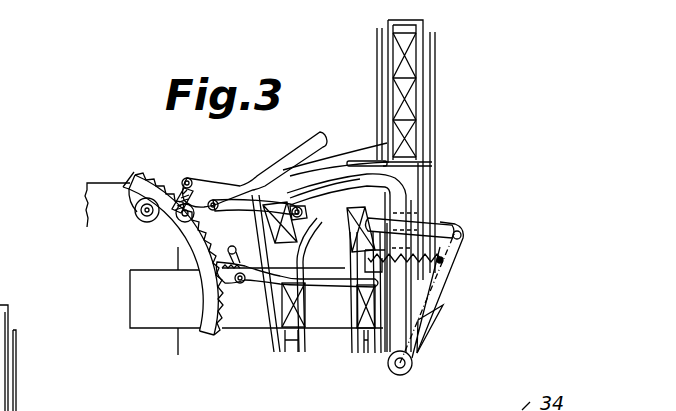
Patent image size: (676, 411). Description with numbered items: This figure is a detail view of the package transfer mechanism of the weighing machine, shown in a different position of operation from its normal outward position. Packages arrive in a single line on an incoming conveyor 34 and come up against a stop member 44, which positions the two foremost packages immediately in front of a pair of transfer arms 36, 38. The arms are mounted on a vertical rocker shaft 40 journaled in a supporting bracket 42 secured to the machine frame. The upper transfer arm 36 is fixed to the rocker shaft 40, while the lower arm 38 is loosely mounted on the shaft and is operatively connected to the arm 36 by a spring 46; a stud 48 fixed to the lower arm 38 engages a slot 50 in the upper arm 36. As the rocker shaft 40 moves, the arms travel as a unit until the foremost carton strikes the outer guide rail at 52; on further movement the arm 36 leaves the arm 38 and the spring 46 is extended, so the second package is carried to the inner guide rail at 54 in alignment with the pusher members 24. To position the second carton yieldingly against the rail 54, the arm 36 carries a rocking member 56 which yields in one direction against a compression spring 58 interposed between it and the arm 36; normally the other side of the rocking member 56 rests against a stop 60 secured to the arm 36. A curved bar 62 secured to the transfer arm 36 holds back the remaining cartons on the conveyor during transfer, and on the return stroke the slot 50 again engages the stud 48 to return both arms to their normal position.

The pusher members 24 is at (296, 141).
The incoming conveyor 34 is at (407, 22).
The upper transfer arm 36 is at (400, 190).
The lower transfer arm 38 is at (462, 247).
The vertical rocker shaft 40 is at (407, 373).
The supporting bracket 42 is at (325, 332).
The stop member 44 is at (410, 222).
The spring 46 is at (418, 265).
The stud 48 is at (463, 232).
The slot 50 is at (437, 197).
The outer guide rail 52 is at (352, 232).
The inner guide rail 54 is at (233, 228).
The rocking member 56 is at (280, 206).
The compression spring 58 is at (286, 203).
The stop 60 is at (270, 278).
The curved bar 62 is at (425, 160).